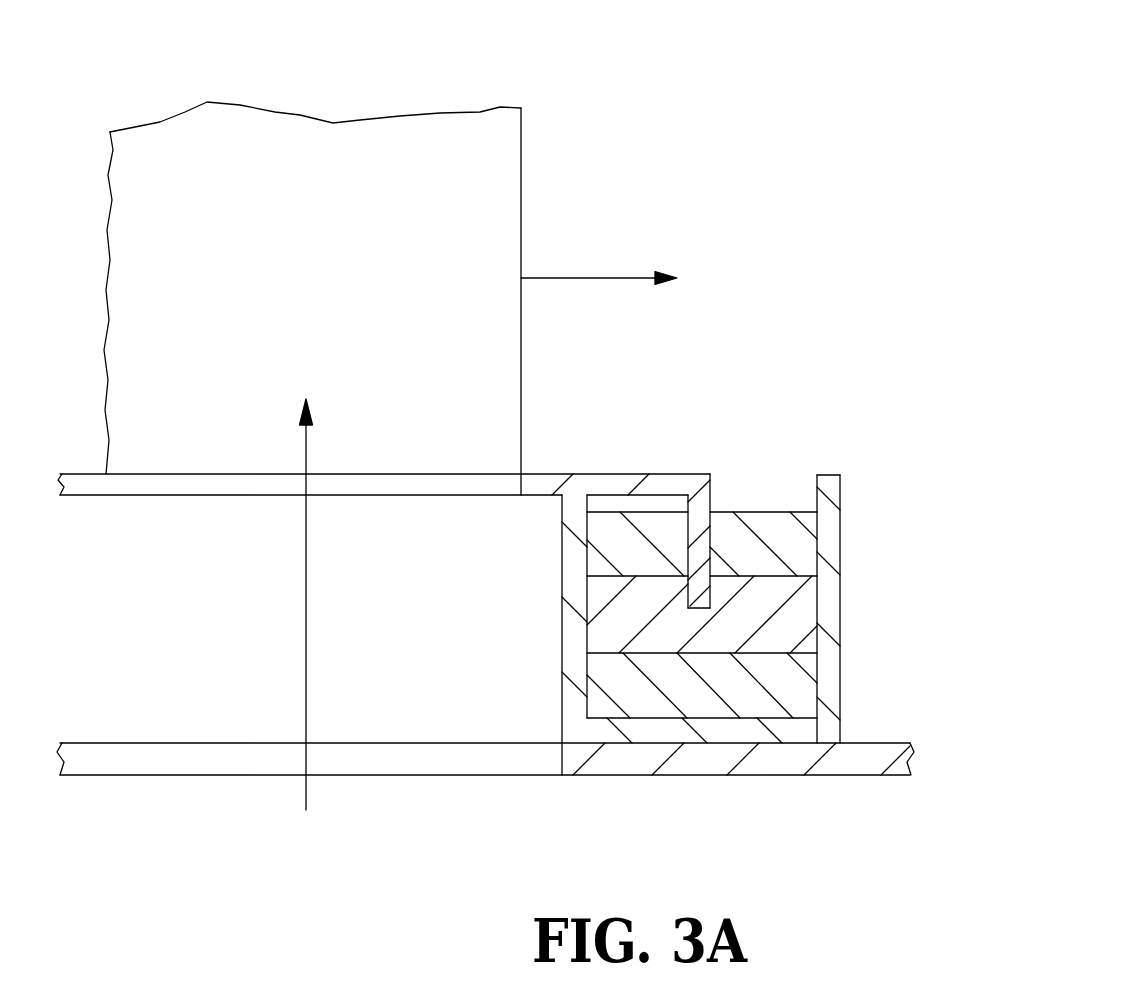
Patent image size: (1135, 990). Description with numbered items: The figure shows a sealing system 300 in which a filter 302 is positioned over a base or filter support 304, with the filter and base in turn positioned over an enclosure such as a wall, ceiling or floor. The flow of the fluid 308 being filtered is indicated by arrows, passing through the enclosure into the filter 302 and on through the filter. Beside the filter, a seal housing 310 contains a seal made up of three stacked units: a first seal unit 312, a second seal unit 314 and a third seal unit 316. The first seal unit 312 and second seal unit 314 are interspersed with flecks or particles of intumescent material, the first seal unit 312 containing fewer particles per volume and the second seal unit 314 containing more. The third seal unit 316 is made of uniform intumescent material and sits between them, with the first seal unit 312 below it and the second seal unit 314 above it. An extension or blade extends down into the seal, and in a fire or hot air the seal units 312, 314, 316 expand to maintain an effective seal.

The sealing system 300 is at (501, 430).
The filter 302 is at (350, 263).
The base or filter support 304 is at (615, 474).
The flow of the fluid 308 is at (585, 277).
The seal housing 310 is at (562, 630).
The first seal unit 312 is at (800, 700).
The second seal unit 314 is at (800, 550).
The third seal unit 316 is at (800, 613).